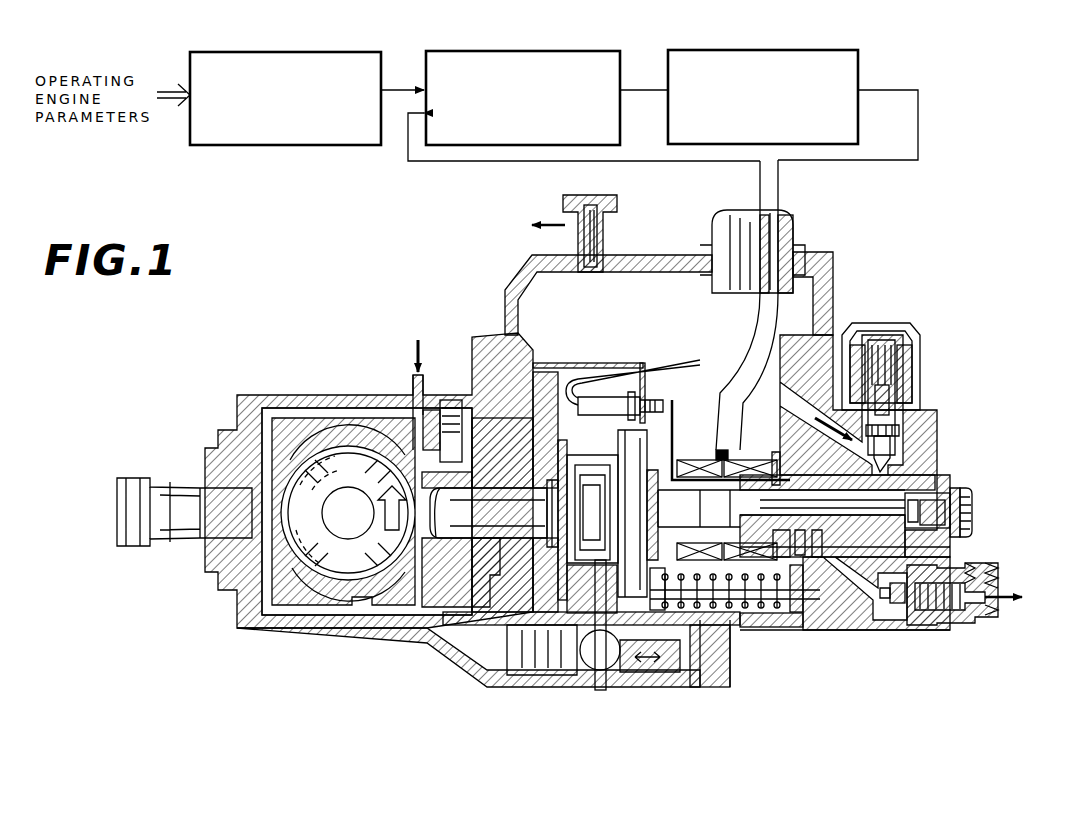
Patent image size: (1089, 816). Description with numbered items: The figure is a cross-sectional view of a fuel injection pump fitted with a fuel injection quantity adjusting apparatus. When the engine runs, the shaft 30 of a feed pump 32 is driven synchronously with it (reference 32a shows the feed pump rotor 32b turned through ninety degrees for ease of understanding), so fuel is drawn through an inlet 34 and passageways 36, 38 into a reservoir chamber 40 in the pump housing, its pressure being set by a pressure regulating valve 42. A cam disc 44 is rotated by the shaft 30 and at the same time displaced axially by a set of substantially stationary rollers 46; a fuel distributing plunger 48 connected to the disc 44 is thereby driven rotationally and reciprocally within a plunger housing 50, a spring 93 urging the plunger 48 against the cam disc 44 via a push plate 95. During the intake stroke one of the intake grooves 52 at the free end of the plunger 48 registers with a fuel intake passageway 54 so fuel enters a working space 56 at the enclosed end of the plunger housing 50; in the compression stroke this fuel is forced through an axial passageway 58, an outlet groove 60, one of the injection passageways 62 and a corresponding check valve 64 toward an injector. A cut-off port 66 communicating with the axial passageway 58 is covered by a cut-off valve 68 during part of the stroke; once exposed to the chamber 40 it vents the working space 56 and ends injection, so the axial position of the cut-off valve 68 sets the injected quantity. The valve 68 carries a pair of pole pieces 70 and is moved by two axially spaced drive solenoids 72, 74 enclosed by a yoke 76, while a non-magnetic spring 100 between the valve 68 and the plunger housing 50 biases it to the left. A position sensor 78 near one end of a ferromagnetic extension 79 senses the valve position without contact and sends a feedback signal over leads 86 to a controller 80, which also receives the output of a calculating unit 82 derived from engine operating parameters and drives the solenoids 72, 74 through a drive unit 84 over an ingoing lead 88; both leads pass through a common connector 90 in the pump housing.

The shaft 30 is at (178, 498).
The feed pump 32 is at (314, 392).
The feed pump rotor rotated through ninety degrees 32a is at (352, 567).
The feed pump rotor 32b is at (413, 607).
The inlet 34 is at (413, 372).
The passageway 36 is at (266, 408).
The passageway 38 is at (503, 442).
The reservoir chamber 40 is at (568, 306).
The pressure regulating valve 42 is at (450, 410).
The cam disc 44 is at (620, 442).
The rollers 46 is at (587, 636).
The fuel distributing plunger 48 is at (880, 500).
The plunger housing 50 is at (948, 480).
The intake grooves 52 is at (933, 545).
The fuel intake passageway 54 is at (890, 460).
The working space 56 is at (947, 525).
The axial passageway 58 is at (972, 497).
The outlet groove 60 is at (818, 562).
The injection passageways 62 is at (865, 593).
The check valve 64 is at (930, 618).
The cut-off port 66 is at (825, 516).
The cut-off valve 68 is at (718, 593).
The pole pieces 70 is at (750, 593).
The drive solenoid 72 is at (691, 461).
The drive solenoid 74 is at (741, 462).
The yoke 76 is at (774, 452).
The position sensor 78 is at (627, 397).
The ferromagnetic extension 79 is at (674, 422).
The controller 80 is at (509, 60).
The calculating unit 82 is at (279, 52).
The drive unit 84 is at (747, 56).
The leads 86 is at (702, 163).
The ingoing lead 88 is at (903, 162).
The connector 90 is at (795, 206).
The spring 93 is at (702, 628).
The push plate 95 is at (699, 508).
The non-magnetic spring 100 is at (808, 598).